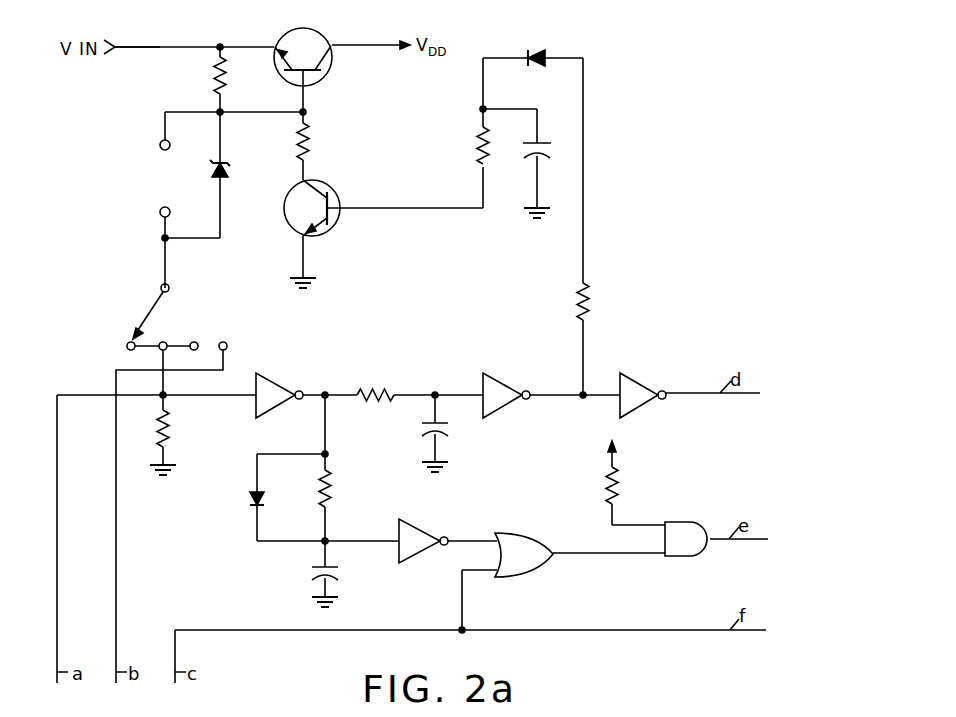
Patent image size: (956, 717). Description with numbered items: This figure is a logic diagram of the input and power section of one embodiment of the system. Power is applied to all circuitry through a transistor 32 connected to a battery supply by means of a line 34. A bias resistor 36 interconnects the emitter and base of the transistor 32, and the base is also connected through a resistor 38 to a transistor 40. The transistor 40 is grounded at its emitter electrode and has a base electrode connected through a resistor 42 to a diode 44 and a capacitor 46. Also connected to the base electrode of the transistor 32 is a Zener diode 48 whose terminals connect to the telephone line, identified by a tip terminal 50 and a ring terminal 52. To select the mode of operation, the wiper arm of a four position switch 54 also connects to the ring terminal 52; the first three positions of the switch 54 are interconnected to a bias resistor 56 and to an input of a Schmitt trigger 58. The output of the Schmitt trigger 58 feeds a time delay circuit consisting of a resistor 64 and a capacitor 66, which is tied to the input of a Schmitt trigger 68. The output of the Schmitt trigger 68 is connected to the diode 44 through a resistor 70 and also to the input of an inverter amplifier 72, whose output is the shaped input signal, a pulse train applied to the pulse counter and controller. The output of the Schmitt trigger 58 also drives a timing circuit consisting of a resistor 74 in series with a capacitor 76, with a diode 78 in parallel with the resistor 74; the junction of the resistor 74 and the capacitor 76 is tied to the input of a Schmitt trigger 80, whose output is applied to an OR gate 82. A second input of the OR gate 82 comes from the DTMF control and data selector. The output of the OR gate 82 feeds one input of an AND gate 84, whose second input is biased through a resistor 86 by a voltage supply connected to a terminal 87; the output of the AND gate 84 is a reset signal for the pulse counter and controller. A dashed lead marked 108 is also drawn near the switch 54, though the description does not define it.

The transistor 32 is at (310, 40).
The line 34 is at (118, 41).
The bias resistor 36 is at (226, 90).
The resistor 38 is at (309, 138).
The transistor 40 is at (334, 192).
The resistor 42 is at (475, 139).
The diode 44 is at (538, 52).
The capacitor 46 is at (548, 148).
The Zener diode 48 is at (228, 163).
The tip terminal 50 is at (170, 142).
The ring terminal 52 is at (170, 214).
The four position switch 54 is at (170, 328).
The bias resistor 56 is at (170, 432).
The Schmitt trigger 58 is at (276, 380).
The resistor 64 is at (378, 388).
The capacitor 66 is at (450, 428).
The Schmitt trigger 68 is at (500, 388).
The resistor 70 is at (588, 298).
The inverter amplifier 72 is at (630, 372).
The resistor 74 is at (333, 497).
The capacitor 76 is at (340, 572).
The diode 78 is at (250, 499).
The Schmitt trigger 80 is at (418, 522).
The OR gate 82 is at (521, 534).
The AND gate 84 is at (683, 523).
The resistor 86 is at (619, 490).
The terminal 87 is at (606, 447).
The line 108 is at (140, 308).